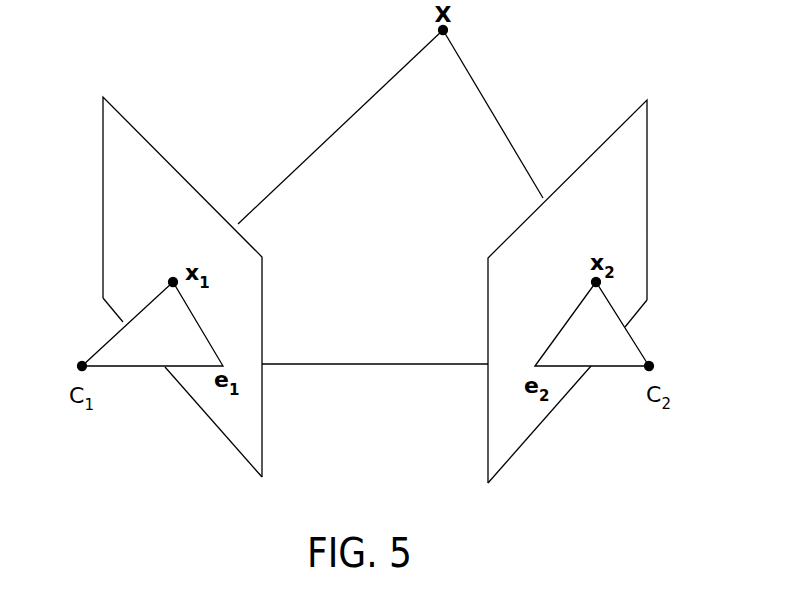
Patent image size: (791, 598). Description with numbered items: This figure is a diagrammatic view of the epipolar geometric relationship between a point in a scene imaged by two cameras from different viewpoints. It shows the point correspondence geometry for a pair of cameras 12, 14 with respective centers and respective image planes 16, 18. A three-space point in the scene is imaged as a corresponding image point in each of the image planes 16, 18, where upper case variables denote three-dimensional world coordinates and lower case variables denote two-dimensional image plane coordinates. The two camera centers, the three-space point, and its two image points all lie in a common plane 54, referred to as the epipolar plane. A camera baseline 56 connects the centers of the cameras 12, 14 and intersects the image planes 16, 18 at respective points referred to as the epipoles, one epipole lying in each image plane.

The camera 12 is at (82, 362).
The camera 14 is at (652, 357).
The image plane 16 is at (132, 122).
The image plane 18 is at (650, 188).
The epipolar plane 54 is at (487, 100).
The camera baseline 56 is at (350, 362).